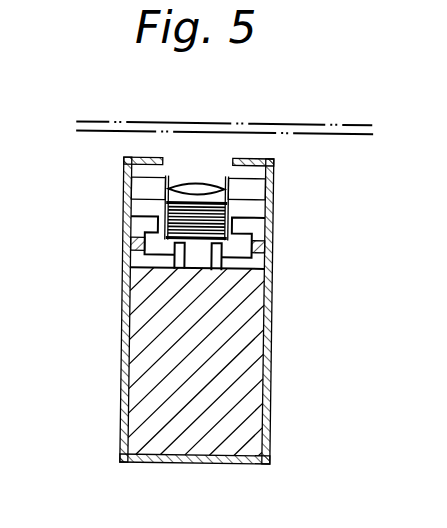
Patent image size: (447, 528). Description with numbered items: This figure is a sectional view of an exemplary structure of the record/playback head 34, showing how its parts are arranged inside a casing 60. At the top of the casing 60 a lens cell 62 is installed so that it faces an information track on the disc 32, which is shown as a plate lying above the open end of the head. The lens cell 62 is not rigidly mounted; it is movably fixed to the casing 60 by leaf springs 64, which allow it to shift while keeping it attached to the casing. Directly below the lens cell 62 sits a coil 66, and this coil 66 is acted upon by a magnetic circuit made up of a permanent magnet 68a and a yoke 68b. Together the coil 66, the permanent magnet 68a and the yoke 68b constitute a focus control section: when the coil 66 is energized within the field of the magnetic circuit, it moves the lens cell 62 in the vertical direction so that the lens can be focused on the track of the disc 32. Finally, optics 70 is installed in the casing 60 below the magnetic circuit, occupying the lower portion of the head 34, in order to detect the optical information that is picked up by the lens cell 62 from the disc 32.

The disc 32 is at (293, 123).
The head 34 is at (91, 284).
The casing 60 is at (127, 183).
The lens cell 62 is at (196, 182).
The leaf springs 64 is at (137, 185).
The coil 66 is at (229, 210).
The permanent magnet 68a is at (259, 244).
The yoke 68b is at (244, 267).
The optics 70 is at (243, 351).